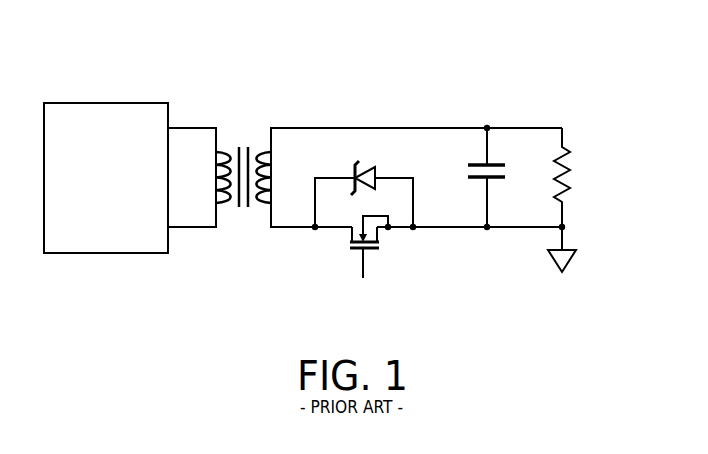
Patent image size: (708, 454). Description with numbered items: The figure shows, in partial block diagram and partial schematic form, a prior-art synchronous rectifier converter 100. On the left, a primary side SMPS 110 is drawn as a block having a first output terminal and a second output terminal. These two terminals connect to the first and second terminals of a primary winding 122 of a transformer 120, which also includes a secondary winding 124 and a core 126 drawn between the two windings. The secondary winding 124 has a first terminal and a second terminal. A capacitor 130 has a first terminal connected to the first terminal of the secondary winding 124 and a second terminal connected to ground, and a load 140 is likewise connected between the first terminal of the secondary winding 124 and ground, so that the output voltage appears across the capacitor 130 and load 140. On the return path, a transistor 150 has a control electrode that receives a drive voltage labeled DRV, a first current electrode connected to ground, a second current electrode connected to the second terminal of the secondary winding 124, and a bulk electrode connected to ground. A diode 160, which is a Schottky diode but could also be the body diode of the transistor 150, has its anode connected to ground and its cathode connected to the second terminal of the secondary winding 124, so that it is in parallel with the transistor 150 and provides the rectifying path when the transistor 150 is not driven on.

The synchronous rectifier converter 100 is at (232, 361).
The primary side SMPS 110 is at (118, 103).
The transformer 120 is at (262, 174).
The primary winding 122 is at (226, 205).
The secondary winding 124 is at (264, 205).
The core 126 is at (244, 143).
The capacitor 130 is at (474, 180).
The load 140 is at (549, 180).
The transistor 150 is at (380, 250).
The diode 160 is at (388, 177).